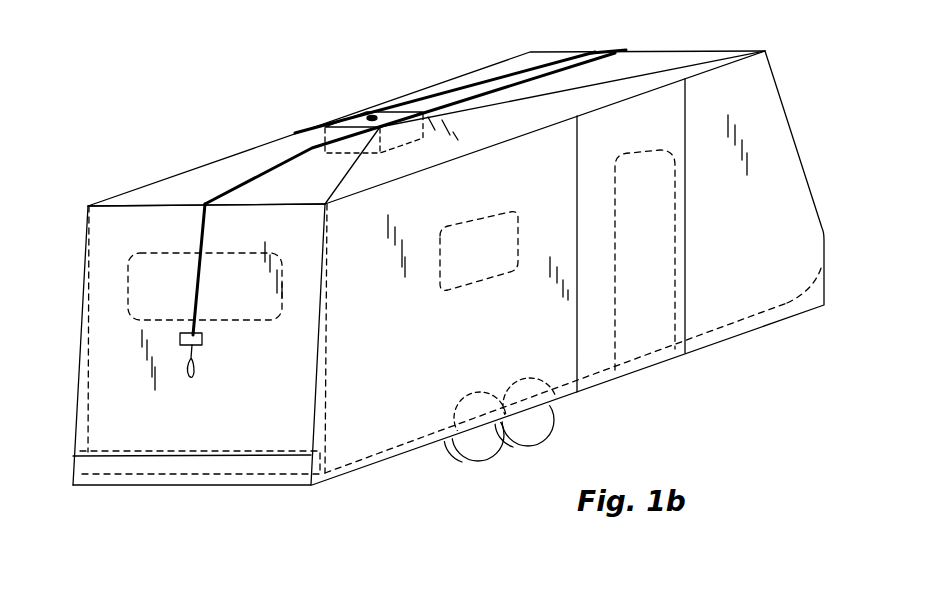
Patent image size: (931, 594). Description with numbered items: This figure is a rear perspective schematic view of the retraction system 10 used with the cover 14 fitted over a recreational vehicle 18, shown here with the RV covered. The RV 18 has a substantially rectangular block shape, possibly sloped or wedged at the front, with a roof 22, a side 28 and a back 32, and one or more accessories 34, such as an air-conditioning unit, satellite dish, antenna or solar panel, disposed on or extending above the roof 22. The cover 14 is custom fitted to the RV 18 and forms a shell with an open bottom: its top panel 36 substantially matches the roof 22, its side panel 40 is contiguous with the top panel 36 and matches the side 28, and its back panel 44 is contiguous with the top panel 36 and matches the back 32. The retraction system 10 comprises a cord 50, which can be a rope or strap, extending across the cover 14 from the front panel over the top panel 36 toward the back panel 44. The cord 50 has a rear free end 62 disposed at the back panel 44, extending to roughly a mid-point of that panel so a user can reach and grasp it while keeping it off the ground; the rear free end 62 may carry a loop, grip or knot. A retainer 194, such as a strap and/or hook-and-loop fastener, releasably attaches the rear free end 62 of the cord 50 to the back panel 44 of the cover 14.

The retraction system 10 is at (248, 180).
The cover 14 is at (137, 192).
The recreational vehicle 18 is at (718, 298).
The roof 22 is at (677, 60).
The side 28 is at (365, 438).
The back 32 is at (243, 427).
The accessory 34 is at (405, 102).
The top panel 36 is at (297, 128).
The side panel 40 is at (415, 415).
The back panel 44 is at (153, 427).
The cord 50 is at (594, 46).
The rear free end 62 is at (193, 293).
The retainer 194 is at (180, 340).